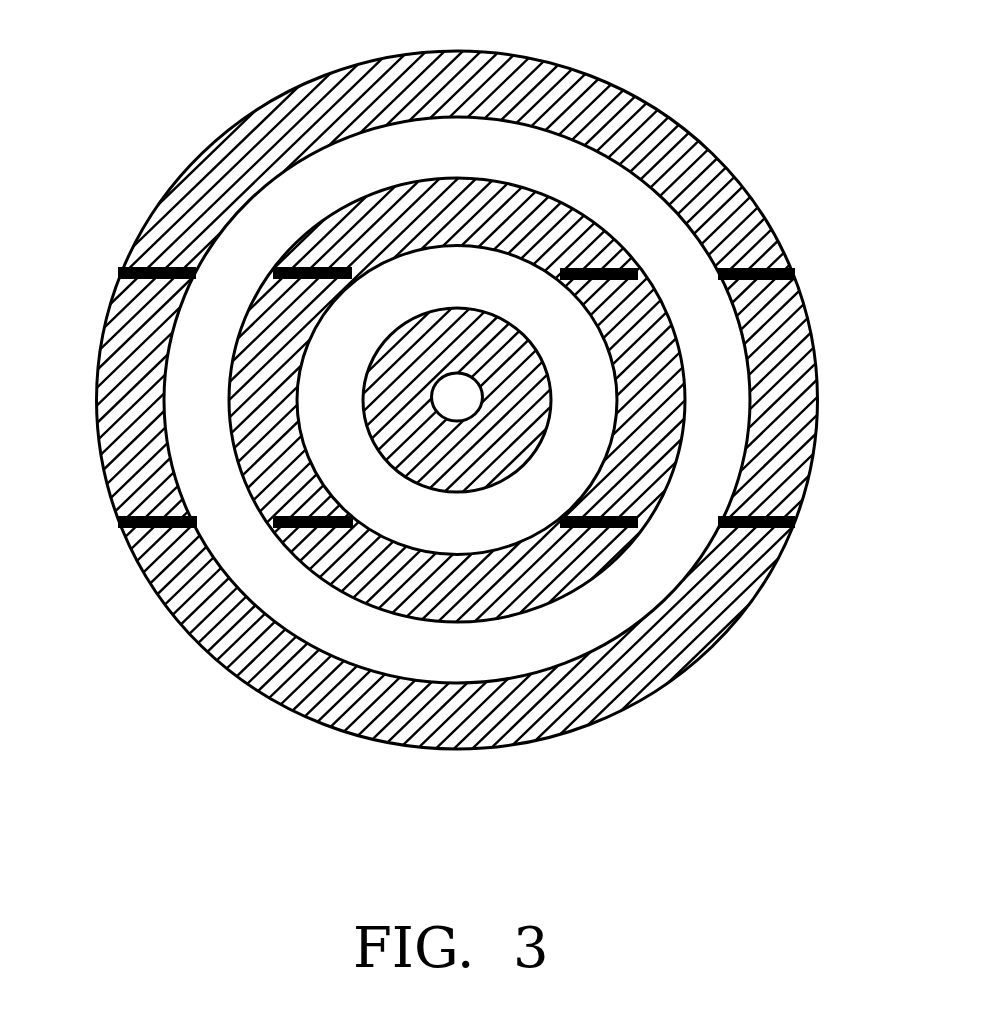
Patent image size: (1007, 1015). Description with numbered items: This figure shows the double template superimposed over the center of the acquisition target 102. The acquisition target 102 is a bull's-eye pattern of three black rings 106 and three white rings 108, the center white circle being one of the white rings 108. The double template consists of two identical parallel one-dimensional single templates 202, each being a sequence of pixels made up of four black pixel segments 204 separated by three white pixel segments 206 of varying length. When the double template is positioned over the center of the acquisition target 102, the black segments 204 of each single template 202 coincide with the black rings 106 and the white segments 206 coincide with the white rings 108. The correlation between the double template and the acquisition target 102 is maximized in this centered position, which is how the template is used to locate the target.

The acquisition target 102 is at (503, 397).
The black rings 106 is at (653, 648).
The white rings 108 is at (457, 400).
The single template 202 is at (841, 274).
The black pixel segments 204 is at (118, 268).
The white pixel segments 206 is at (247, 243).